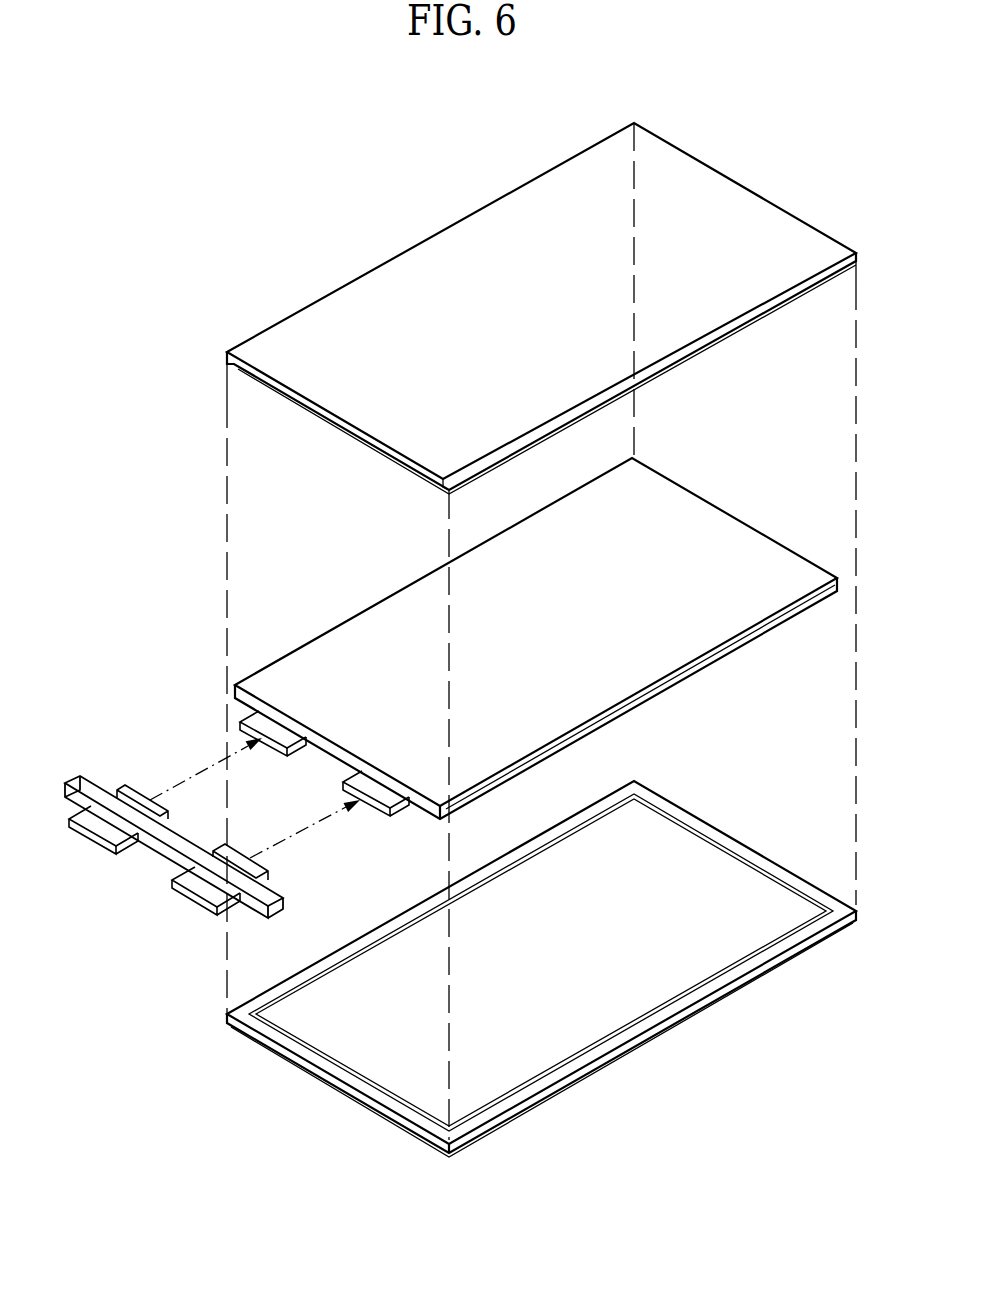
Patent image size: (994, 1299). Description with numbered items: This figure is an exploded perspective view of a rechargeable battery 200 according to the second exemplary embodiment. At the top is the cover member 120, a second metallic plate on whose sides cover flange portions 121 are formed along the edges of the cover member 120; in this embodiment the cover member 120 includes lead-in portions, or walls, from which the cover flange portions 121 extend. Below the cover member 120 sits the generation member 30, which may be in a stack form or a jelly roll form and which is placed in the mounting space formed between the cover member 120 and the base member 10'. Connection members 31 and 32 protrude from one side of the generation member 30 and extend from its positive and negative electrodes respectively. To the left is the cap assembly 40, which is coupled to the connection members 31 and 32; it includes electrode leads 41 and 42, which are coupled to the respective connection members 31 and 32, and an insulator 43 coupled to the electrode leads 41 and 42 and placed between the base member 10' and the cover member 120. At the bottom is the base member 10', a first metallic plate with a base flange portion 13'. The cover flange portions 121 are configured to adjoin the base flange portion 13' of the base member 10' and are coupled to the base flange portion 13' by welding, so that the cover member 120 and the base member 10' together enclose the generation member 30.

The rechargeable battery 200 is at (314, 203).
The cover member 120 is at (306, 270).
The cover flange portions 121 is at (676, 366).
The generation member 30 is at (328, 594).
The connection member 31 is at (290, 752).
The connection member 32 is at (393, 811).
The cap assembly 40 is at (136, 884).
The electrode lead 41 is at (94, 843).
The electrode lead 42 is at (192, 901).
The insulator 43 is at (94, 784).
The base member 10' is at (541, 969).
The base flange portion 13' is at (541, 1034).